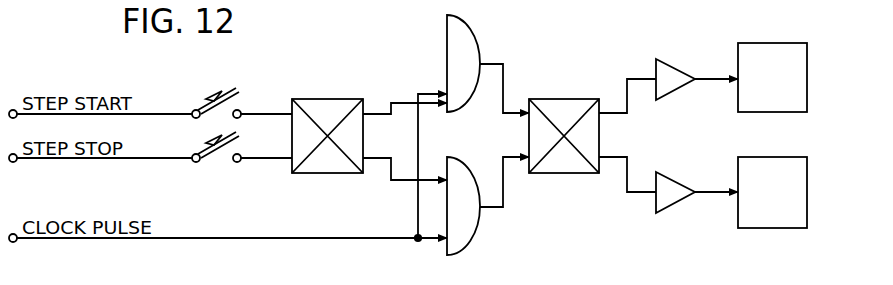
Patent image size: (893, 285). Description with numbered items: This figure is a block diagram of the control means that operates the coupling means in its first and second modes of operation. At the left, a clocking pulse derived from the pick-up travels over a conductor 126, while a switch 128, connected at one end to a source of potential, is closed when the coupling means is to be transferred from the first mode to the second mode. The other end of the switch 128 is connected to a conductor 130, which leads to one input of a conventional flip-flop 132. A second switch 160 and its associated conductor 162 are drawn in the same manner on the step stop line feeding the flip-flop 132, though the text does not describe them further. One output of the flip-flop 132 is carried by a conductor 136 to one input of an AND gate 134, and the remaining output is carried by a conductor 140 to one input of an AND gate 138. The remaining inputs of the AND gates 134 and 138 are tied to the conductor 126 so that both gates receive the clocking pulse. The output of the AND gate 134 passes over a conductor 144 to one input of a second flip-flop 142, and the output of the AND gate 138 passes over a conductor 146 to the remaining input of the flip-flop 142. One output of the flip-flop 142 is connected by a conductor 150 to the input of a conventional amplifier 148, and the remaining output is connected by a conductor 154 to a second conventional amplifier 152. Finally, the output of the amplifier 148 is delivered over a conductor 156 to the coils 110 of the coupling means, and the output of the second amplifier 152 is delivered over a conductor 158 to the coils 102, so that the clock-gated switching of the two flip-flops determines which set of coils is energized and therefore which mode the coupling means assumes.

The coils 102 is at (777, 157).
The coils 110 is at (771, 43).
The conductor 126 is at (229, 238).
The switch 128 is at (229, 90).
The conductor 130 is at (268, 112).
The flip-flop 132 is at (330, 99).
The AND gate 134 is at (471, 36).
The conductor 136 is at (391, 50).
The AND gate 138 is at (480, 222).
The conductor 140 is at (391, 172).
The flip-flop 142 is at (555, 99).
The conductor 144 is at (506, 72).
The conductor 146 is at (503, 170).
The amplifier 148 is at (677, 38).
The conductor 150 is at (640, 79).
The amplifier 152 is at (668, 172).
The conductor 154 is at (627, 172).
The conductor 156 is at (703, 80).
The conductor 158 is at (703, 193).
The step stop switch 160 is at (222, 136).
The step stop switch contact 162 is at (266, 156).